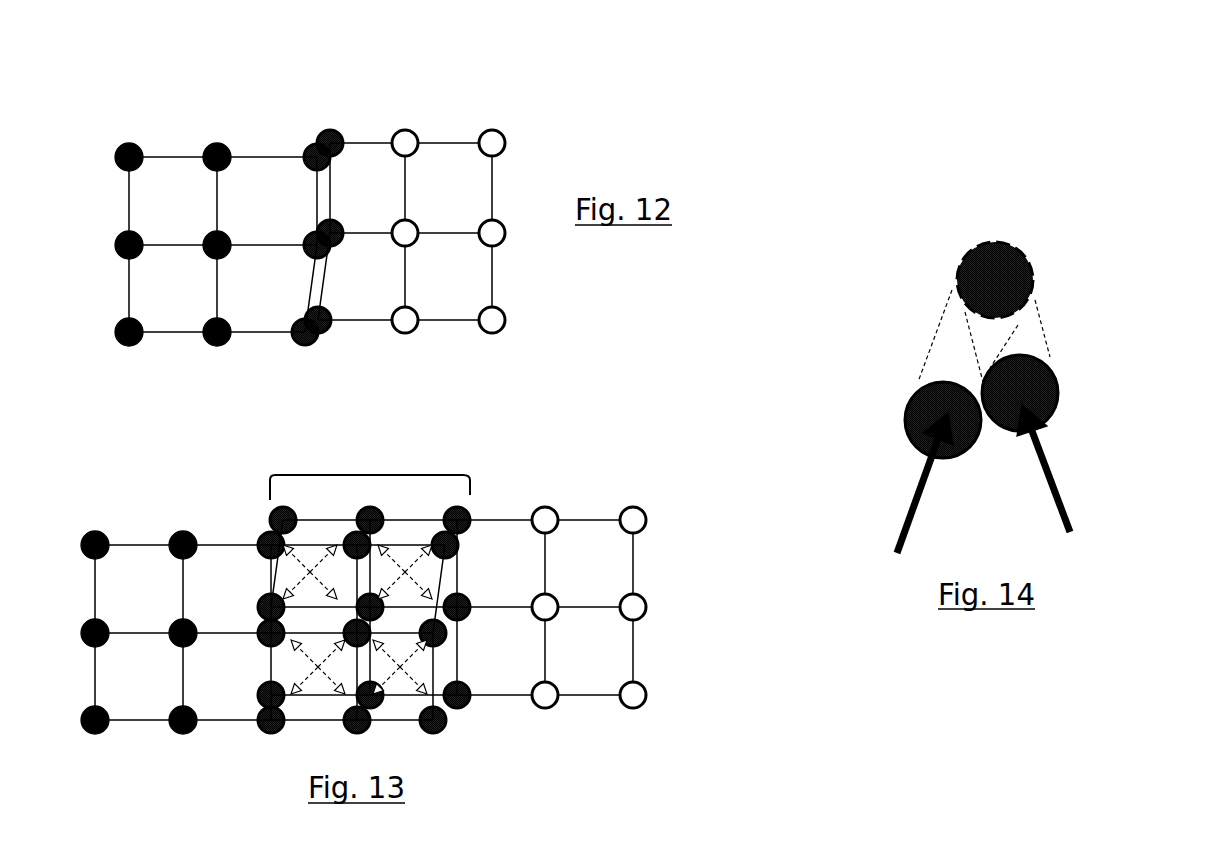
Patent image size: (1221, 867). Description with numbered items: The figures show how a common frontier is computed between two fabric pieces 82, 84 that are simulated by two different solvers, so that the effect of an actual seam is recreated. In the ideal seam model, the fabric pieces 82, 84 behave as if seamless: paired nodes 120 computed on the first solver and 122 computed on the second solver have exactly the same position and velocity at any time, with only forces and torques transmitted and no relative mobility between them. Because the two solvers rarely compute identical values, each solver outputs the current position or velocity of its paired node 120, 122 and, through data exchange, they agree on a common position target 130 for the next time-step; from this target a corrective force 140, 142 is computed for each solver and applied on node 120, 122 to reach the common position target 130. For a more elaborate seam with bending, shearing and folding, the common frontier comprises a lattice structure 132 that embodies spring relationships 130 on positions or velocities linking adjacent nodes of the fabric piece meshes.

In FIG. 12, the fabric piece 82 is at (152, 320).
In FIG. 13, the fabric piece 82 is at (145, 697).
In FIG. 12, the fabric piece 84 is at (475, 285).
In FIG. 13, the fabric piece 84 is at (622, 655).
In FIG. 12, the paired node 120 is at (308, 240).
In FIG. 14, the paired node 120 is at (913, 403).
In FIG. 12, the paired node 122 is at (338, 230).
In FIG. 14, the paired node 122 is at (1053, 373).
In FIG. 13, the common position target 130 is at (308, 565).
In FIG. 14, the common position target 130 is at (1020, 270).
In FIG. 13, the lattice structure 132 is at (440, 462).
In FIG. 14, the corrective force 140 is at (898, 518).
In FIG. 14, the corrective force 142 is at (1063, 493).